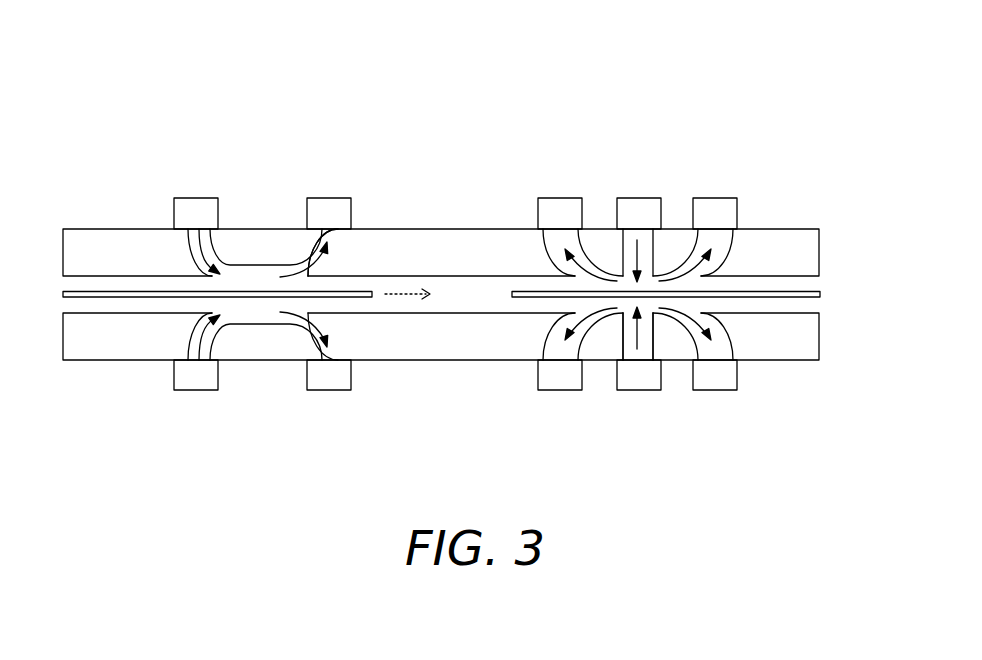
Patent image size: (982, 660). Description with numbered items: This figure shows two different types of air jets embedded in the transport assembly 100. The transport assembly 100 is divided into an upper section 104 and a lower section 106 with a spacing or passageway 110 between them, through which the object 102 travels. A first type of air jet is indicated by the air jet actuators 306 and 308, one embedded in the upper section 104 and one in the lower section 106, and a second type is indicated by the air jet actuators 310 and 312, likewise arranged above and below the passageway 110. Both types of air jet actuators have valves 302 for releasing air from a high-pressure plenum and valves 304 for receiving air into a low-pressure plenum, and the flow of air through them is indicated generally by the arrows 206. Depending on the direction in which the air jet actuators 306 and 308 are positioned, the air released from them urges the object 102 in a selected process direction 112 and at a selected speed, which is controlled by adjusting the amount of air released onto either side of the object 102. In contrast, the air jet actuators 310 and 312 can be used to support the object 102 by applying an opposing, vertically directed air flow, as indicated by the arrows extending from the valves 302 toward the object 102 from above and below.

The transport assembly 100 is at (510, 125).
The object 102 is at (132, 297).
The upper section 104 is at (818, 252).
The lower section 106 is at (815, 347).
The passageway 110 is at (832, 297).
The process direction 112 is at (412, 300).
The arrows 206 is at (323, 258).
The valves 302 is at (193, 208).
The valves 304 is at (335, 213).
The air jet actuator 306 is at (265, 195).
The air jet actuator 308 is at (258, 385).
The air jet actuator 310 is at (674, 160).
The air jet actuator 312 is at (607, 400).